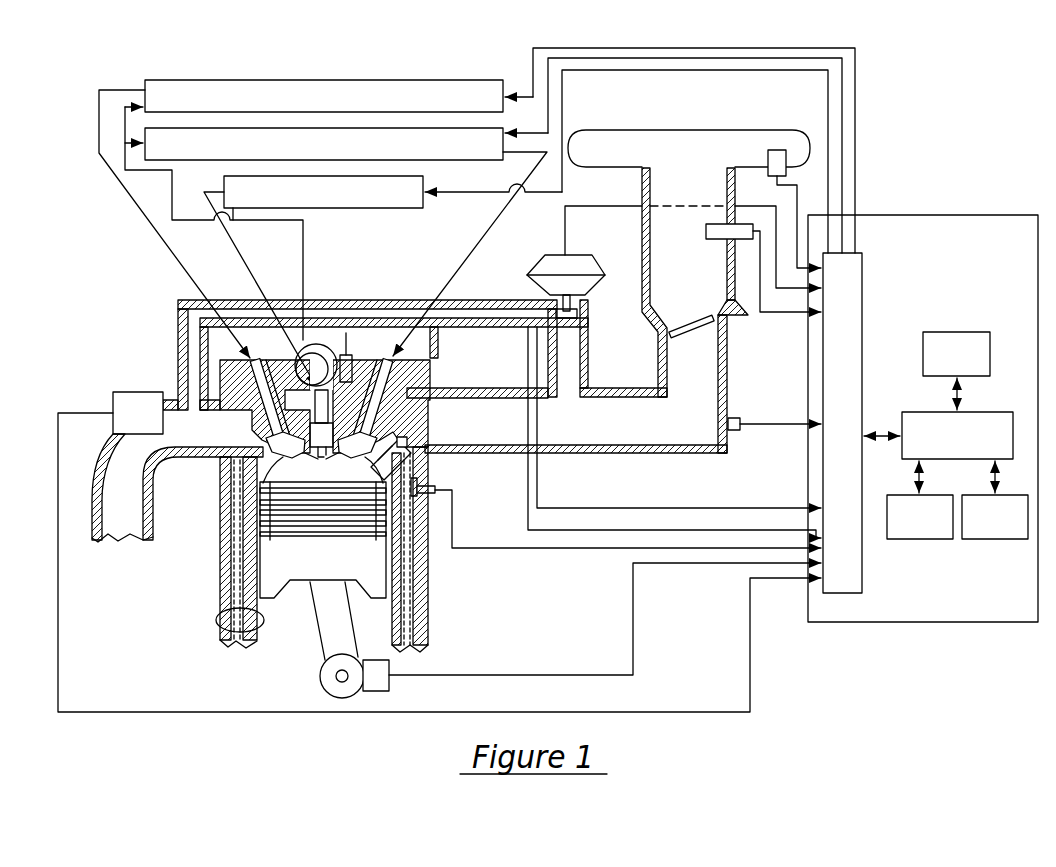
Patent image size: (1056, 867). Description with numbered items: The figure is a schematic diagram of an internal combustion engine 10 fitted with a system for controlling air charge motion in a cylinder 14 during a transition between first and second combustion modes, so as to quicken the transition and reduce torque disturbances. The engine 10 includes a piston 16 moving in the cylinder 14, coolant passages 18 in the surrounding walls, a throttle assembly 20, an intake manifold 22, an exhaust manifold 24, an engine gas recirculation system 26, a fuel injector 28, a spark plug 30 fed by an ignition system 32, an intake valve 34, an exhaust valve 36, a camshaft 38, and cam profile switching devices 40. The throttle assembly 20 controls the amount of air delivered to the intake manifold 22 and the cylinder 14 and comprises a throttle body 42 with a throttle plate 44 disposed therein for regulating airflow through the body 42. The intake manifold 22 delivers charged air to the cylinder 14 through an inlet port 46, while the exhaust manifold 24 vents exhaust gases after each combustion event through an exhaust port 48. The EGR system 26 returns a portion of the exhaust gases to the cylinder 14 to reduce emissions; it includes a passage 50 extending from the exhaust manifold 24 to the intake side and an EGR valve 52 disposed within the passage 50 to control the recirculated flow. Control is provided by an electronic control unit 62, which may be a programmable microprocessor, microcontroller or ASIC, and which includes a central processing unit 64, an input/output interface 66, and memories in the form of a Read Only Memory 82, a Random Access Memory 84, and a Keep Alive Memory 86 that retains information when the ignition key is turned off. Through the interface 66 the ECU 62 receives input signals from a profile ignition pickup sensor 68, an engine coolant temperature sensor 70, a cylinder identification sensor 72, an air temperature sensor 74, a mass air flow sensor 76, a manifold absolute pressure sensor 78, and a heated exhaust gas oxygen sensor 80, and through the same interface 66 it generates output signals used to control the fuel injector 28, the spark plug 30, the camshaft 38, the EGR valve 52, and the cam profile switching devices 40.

The internal combustion engine 10 is at (138, 305).
The cylinder 14 is at (224, 619).
The piston 16 is at (233, 569).
The coolant passage 18 is at (415, 601).
The throttle assembly 20 is at (660, 122).
The intake manifold 22 is at (590, 455).
The exhaust manifold 24 is at (158, 502).
The engine gas recirculation (EGR) system 26 is at (397, 292).
The fuel injector 28 is at (411, 447).
The spark plug 30 is at (327, 419).
The ignition system 32 is at (412, 208).
The intake valve 34 is at (350, 510).
The exhaust valve 36 is at (300, 510).
The camshaft 38 is at (314, 338).
The cam profile switching device 40 is at (323, 78).
The throttle body 42 is at (642, 183).
The throttle plate 44 is at (690, 314).
The inlet port 46 is at (379, 438).
The exhaust port 48 is at (262, 444).
The passage 50 is at (245, 299).
The EGR valve 52 is at (563, 254).
The electronic control unit (ECU) 62 is at (1018, 214).
The central processing unit (CPU) 64 is at (912, 411).
The input/output (I/O) interface 66 is at (862, 270).
The profile ignition pickup (PIP) sensor 68 is at (377, 659).
The engine coolant temperature sensor 70 is at (440, 489).
The cylinder identification (CID) sensor 72 is at (347, 353).
The air temperature sensor 74 is at (777, 149).
The mass air flow (MAF) sensor 76 is at (716, 223).
The manifold absolute pressure (MAP) sensor 78 is at (745, 432).
The Heated Exhaust Gas Oxygen (HEGO) sensor 80 is at (113, 405).
The Read Only Memory (ROM) 82 is at (958, 331).
The Random Access Memory (RAM) 84 is at (918, 540).
The Keep Alive Memory (KAM) 86 is at (994, 540).